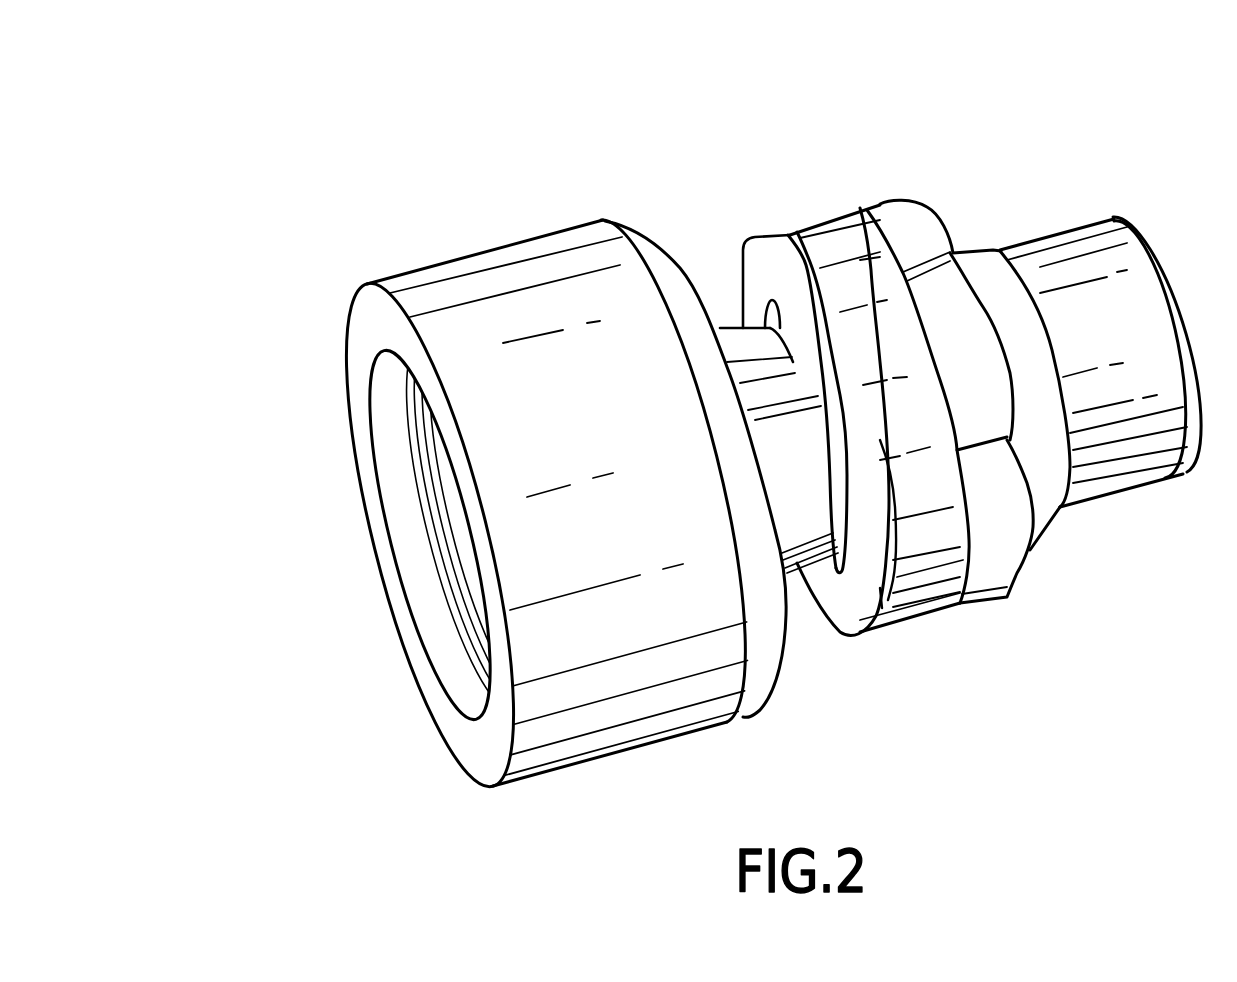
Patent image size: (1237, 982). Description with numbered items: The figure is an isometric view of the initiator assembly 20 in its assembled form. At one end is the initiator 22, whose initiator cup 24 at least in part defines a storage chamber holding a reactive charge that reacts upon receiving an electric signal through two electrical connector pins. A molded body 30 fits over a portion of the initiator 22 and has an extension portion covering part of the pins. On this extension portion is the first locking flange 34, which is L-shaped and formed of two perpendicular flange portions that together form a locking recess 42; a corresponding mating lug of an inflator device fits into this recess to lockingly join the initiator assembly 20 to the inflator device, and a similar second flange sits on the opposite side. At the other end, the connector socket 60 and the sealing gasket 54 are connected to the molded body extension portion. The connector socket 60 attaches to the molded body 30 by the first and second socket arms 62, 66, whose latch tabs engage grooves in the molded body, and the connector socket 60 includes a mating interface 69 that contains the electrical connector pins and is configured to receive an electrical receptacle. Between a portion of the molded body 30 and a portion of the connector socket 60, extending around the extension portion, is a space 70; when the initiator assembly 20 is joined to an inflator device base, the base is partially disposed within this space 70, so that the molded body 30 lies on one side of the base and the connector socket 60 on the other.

The initiator assembly 20 is at (320, 218).
The initiator 22 is at (1063, 226).
The initiator cup 24 is at (1113, 217).
The molded body 30 is at (878, 195).
The first locking flange 34 is at (780, 382).
The locking recess 42 is at (811, 484).
The sealing gasket 54 is at (882, 607).
The connector socket 60 is at (506, 246).
The first socket arm 62 is at (724, 326).
The second socket arm 66 is at (798, 566).
The mating interface 69 is at (413, 588).
The space 70 is at (703, 258).